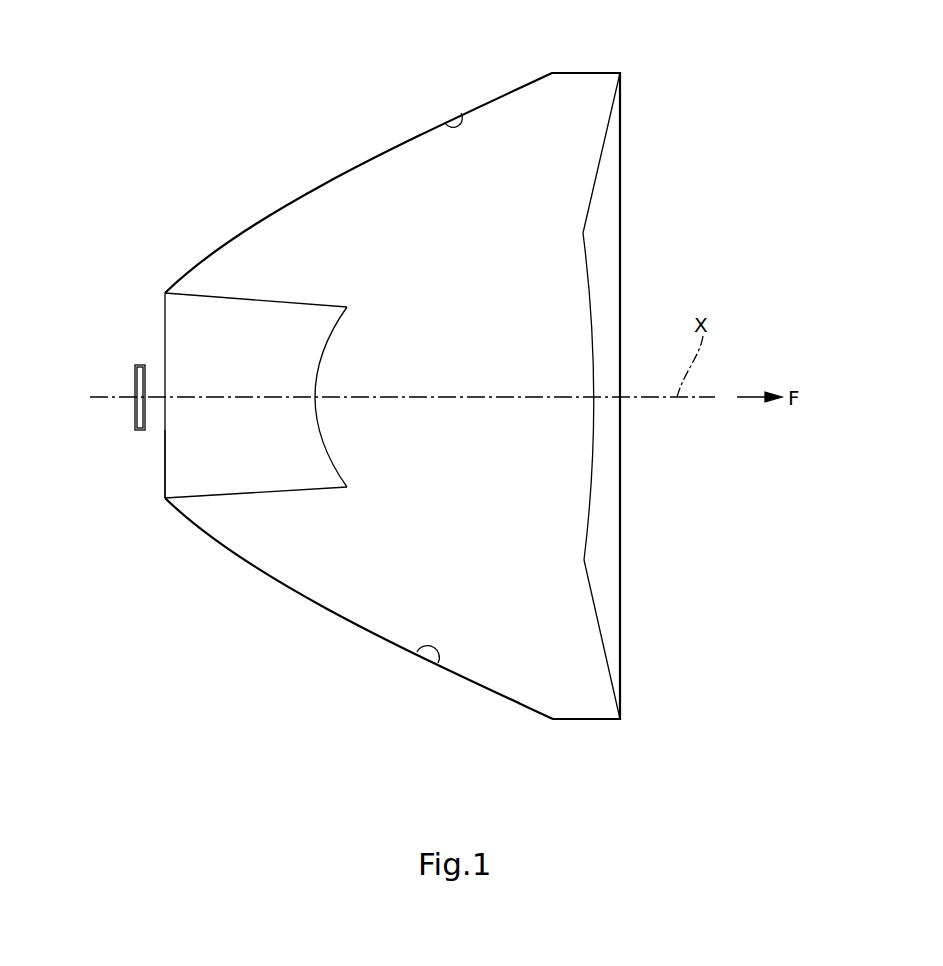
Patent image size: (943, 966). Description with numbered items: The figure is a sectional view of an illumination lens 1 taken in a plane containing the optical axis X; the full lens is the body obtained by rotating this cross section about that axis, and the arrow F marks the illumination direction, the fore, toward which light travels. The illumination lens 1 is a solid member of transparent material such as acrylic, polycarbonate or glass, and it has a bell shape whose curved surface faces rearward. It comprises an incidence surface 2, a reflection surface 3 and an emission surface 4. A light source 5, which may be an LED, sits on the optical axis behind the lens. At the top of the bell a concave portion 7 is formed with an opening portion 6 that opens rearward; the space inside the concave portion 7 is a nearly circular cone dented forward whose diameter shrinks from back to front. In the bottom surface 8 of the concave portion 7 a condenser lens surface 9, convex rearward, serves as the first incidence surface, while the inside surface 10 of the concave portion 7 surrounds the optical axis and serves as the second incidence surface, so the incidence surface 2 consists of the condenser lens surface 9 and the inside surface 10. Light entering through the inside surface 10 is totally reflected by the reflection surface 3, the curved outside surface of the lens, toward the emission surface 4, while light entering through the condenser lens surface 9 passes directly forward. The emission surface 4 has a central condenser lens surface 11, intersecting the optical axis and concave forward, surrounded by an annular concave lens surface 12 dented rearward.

The illumination lens 1 is at (287, 137).
The incidence surface 2 is at (209, 420).
The reflection surface 3 is at (460, 113).
The emission surface 4 is at (655, 396).
The light source 5 is at (132, 419).
The opening portion 6 is at (163, 458).
The concave portion 7 is at (178, 480).
The bottom surface 8 is at (277, 397).
The condenser lens surface 9 is at (317, 421).
The inside surface 10 is at (190, 296).
The condenser lens surface 11 is at (594, 459).
The concave lens surface 12 is at (594, 183).